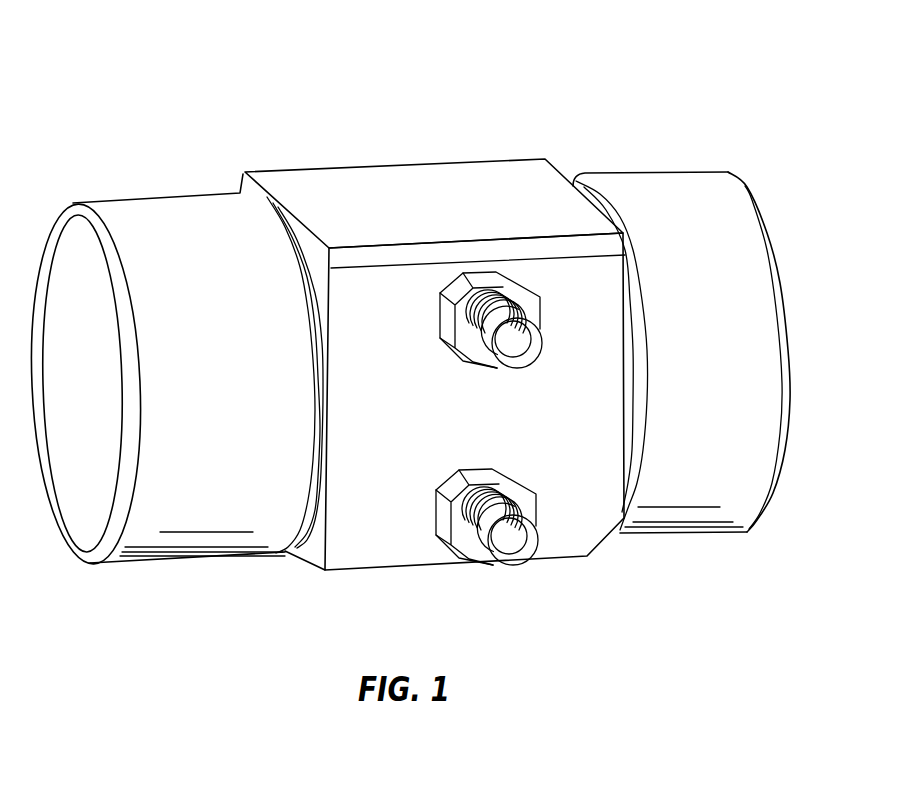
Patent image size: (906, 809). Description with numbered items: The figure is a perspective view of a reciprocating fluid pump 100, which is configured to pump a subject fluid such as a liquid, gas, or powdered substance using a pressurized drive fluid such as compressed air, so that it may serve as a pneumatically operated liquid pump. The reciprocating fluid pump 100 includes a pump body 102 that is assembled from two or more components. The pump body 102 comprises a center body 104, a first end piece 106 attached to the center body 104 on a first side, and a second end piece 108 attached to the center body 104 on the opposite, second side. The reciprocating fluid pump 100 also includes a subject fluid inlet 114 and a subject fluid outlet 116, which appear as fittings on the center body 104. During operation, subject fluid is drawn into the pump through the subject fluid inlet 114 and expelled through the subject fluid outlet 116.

The reciprocating fluid pump 100 is at (195, 88).
The pump body 102 is at (462, 193).
The center body 104 is at (362, 200).
The first end piece 106 is at (167, 221).
The second end piece 108 is at (668, 197).
The subject fluid inlet 114 is at (516, 548).
The subject fluid outlet 116 is at (522, 349).